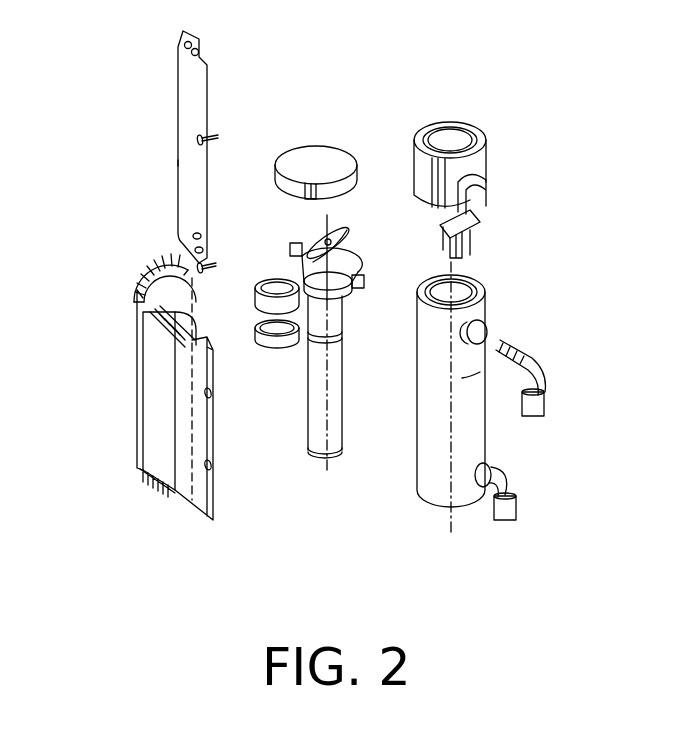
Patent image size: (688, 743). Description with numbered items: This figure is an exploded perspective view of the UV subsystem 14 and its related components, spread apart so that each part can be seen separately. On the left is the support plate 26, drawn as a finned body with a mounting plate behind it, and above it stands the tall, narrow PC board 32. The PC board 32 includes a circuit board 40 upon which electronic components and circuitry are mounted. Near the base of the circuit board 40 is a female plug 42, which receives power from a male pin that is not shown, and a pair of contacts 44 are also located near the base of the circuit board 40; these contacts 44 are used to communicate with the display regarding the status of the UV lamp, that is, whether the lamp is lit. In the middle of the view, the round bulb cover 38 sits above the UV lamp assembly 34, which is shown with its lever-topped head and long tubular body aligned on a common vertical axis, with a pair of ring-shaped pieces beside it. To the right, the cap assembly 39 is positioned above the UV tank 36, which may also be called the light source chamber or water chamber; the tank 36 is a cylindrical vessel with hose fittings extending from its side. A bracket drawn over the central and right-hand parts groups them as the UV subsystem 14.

The UV subsystem 14 is at (520, 76).
The support plate 26 is at (160, 413).
The PC board 32 is at (178, 107).
The UV lamp assembly 34 is at (346, 257).
The UV tank 36 is at (437, 475).
The bulb cover 38 is at (304, 165).
The cap assembly 39 is at (490, 178).
The circuit board 40 is at (178, 163).
The female plug 42 is at (180, 233).
The contacts 44 is at (188, 247).